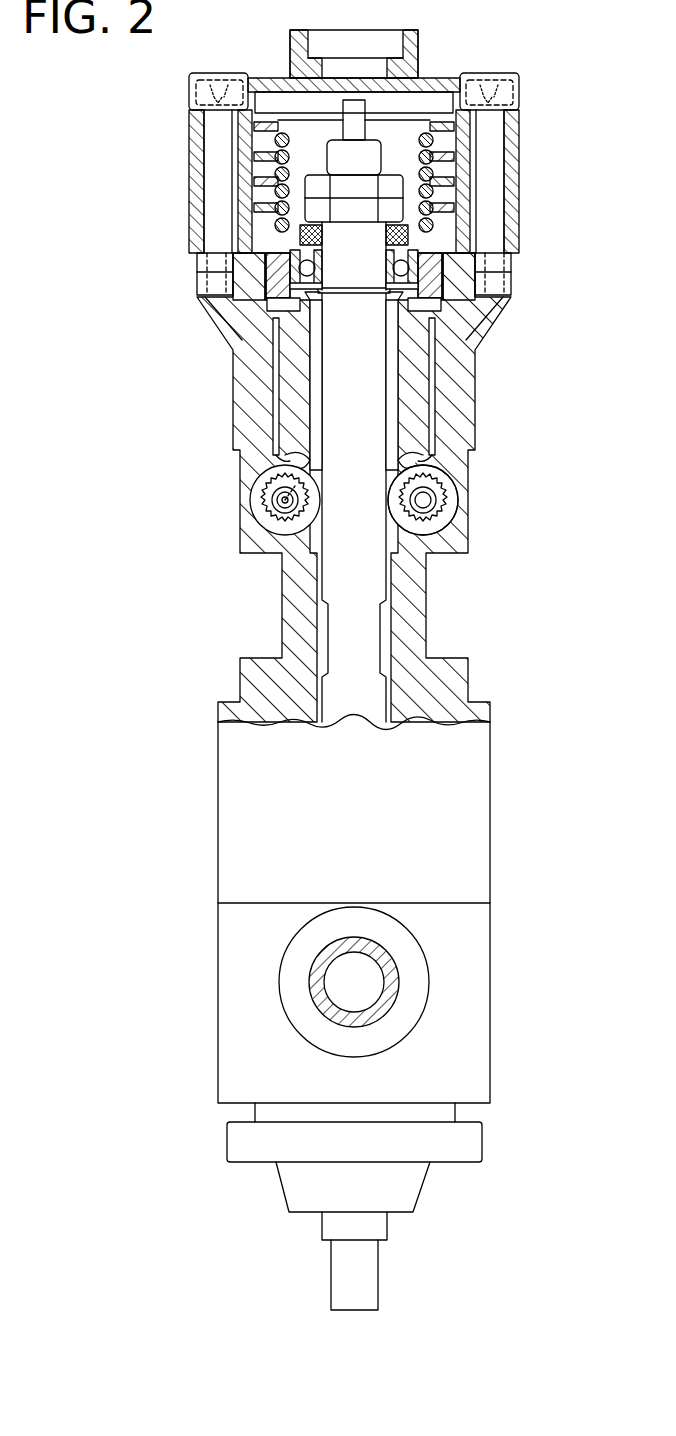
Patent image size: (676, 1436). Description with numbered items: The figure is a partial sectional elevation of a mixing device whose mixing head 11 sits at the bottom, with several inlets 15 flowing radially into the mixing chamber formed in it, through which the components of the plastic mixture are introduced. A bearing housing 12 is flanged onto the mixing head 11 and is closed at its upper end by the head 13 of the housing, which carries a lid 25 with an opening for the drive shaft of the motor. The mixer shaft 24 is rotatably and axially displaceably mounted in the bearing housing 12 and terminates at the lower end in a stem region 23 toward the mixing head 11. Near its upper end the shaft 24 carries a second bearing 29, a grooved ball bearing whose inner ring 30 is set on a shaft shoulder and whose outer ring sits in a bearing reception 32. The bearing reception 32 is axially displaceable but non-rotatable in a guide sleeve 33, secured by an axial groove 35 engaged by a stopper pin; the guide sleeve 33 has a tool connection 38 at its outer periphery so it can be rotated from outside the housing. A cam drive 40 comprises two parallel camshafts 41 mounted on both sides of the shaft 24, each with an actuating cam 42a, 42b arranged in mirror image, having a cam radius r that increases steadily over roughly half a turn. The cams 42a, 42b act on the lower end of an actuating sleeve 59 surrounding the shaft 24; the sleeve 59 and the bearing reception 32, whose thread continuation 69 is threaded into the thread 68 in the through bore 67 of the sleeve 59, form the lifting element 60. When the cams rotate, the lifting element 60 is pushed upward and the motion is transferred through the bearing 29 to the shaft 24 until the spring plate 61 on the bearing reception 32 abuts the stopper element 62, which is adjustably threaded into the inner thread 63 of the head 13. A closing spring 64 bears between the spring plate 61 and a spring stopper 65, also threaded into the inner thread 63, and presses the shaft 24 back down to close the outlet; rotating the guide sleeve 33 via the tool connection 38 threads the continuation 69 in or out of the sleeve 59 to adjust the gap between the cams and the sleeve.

The mixing head 11 is at (470, 962).
The bearing housing 12 is at (365, 782).
The head of the housing 13 is at (512, 148).
The inlets 15 is at (365, 988).
The valve stem 23 is at (362, 1273).
The mixer shaft 24 is at (365, 566).
The lid 25 is at (416, 70).
The second bearing 29 is at (496, 270).
The inner ring 30 is at (505, 304).
The bearing reception 32 is at (255, 308).
The guide sleeve 33 is at (470, 322).
The groove 35 is at (428, 252).
The tool connection 38 is at (205, 276).
The cam drive 40 is at (470, 497).
The camshafts 41 is at (265, 522).
The actuating cam 42a is at (300, 447).
The actuating cam 42b is at (462, 448).
The actuating sleeve 59 is at (262, 346).
The lifting element 60 is at (318, 372).
The spring plate 61 is at (300, 212).
The stopper element 62 is at (275, 176).
The inner thread 63 is at (240, 118).
The closing spring 64 is at (440, 130).
The spring stopper 65 is at (445, 158).
The through bore 67 is at (396, 388).
The thread 68 is at (308, 392).
The thread continuation 69 is at (432, 352).
The cam radius r is at (288, 498).